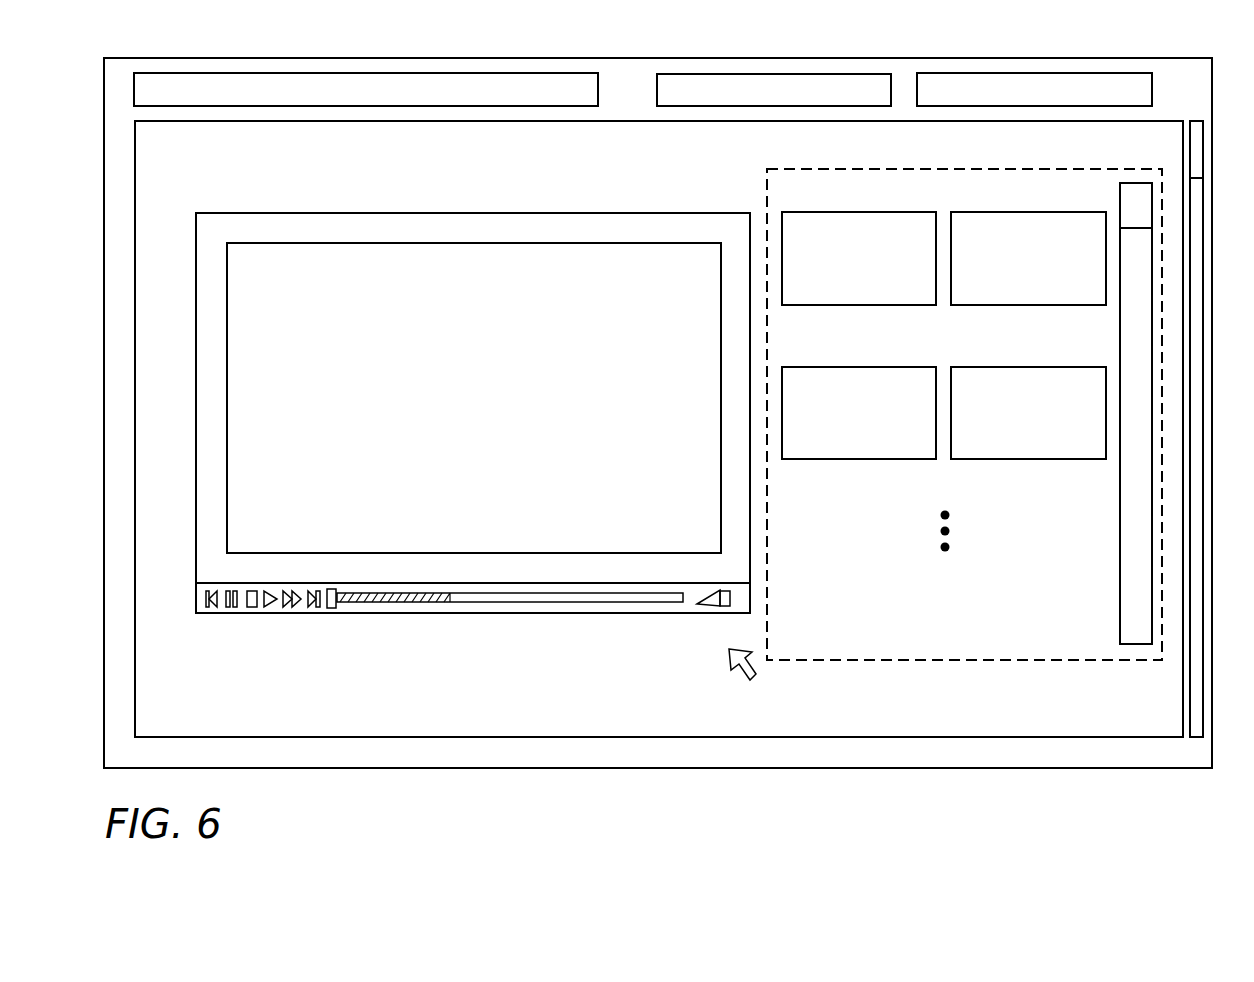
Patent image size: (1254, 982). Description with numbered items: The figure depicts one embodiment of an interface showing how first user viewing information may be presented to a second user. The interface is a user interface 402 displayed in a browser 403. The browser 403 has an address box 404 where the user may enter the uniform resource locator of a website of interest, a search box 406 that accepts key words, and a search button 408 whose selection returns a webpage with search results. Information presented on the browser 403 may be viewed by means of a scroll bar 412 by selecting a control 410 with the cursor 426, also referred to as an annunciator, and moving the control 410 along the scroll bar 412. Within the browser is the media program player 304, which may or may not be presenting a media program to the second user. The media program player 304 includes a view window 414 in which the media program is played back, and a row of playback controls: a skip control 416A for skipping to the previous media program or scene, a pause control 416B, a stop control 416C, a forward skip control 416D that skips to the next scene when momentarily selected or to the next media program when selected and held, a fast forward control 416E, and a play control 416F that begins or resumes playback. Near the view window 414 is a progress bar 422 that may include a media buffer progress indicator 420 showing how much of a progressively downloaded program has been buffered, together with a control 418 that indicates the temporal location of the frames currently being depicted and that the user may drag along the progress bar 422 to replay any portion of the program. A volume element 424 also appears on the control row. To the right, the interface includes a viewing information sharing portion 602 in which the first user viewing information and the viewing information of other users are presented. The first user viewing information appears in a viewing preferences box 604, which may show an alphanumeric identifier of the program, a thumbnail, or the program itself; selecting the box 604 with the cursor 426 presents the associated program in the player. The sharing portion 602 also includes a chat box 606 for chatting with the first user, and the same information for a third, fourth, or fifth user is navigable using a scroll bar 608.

The media program player 304 is at (678, 212).
The user interface 402 is at (905, 121).
The browser 403 is at (622, 58).
The address box 404 is at (493, 73).
The search box 406 is at (812, 73).
The search button 408 is at (1115, 73).
The control 410 is at (1196, 163).
The scroll bar 412 is at (1196, 250).
The view window 414 is at (427, 242).
The skip control 416A is at (212, 612).
The pause control 416B is at (232, 612).
The stop control 416C is at (252, 612).
The forward skip control 416D is at (313, 612).
The fast forward control 416E is at (290, 612).
The play control 416F is at (270, 612).
The control 418 is at (334, 612).
The media buffer progress indicator 420 is at (450, 602).
The progress bar 422 is at (545, 602).
The volume control 424 is at (722, 613).
The cursor 426 is at (753, 677).
The viewing information sharing portion 602 is at (895, 169).
The viewing preferences box 604 is at (810, 305).
The chat box 606 is at (987, 305).
The scroll bar 608 is at (1120, 511).